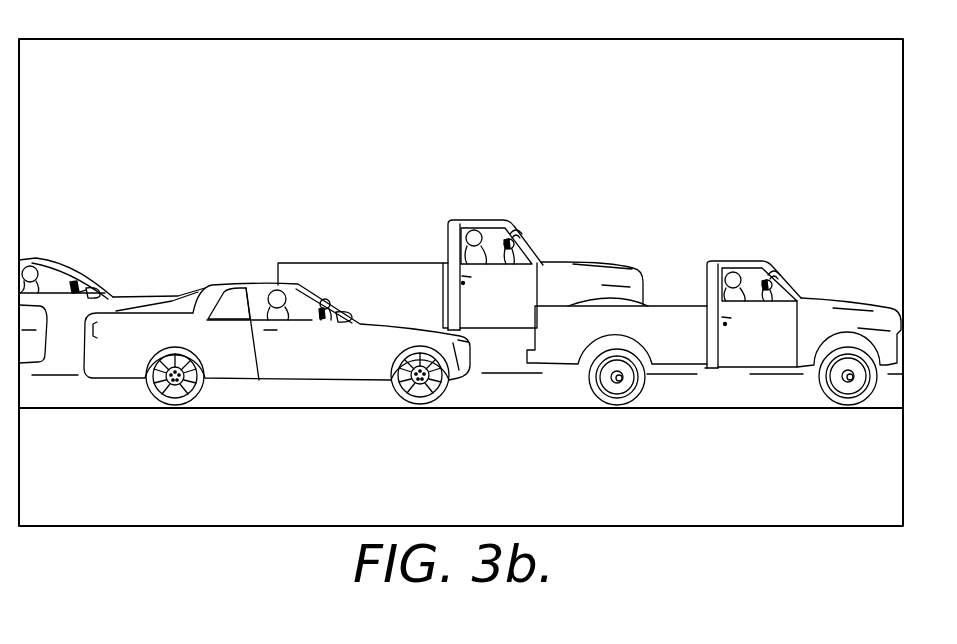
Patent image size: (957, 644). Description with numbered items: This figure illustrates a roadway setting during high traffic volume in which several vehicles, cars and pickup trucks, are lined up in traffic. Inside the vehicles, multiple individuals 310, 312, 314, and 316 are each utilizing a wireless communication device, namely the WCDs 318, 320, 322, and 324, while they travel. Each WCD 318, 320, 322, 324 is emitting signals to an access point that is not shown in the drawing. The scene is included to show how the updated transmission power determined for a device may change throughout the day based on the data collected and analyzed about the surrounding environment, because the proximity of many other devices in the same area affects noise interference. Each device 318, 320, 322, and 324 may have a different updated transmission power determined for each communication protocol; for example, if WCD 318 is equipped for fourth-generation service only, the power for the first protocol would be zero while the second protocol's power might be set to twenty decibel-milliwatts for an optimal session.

The individual 310 is at (28, 256).
The individual 312 is at (272, 288).
The individual 314 is at (465, 241).
The individual 316 is at (727, 282).
The WCD 318 is at (103, 282).
The WCD 320 is at (322, 320).
The WCD 322 is at (505, 262).
The WCD 324 is at (766, 304).